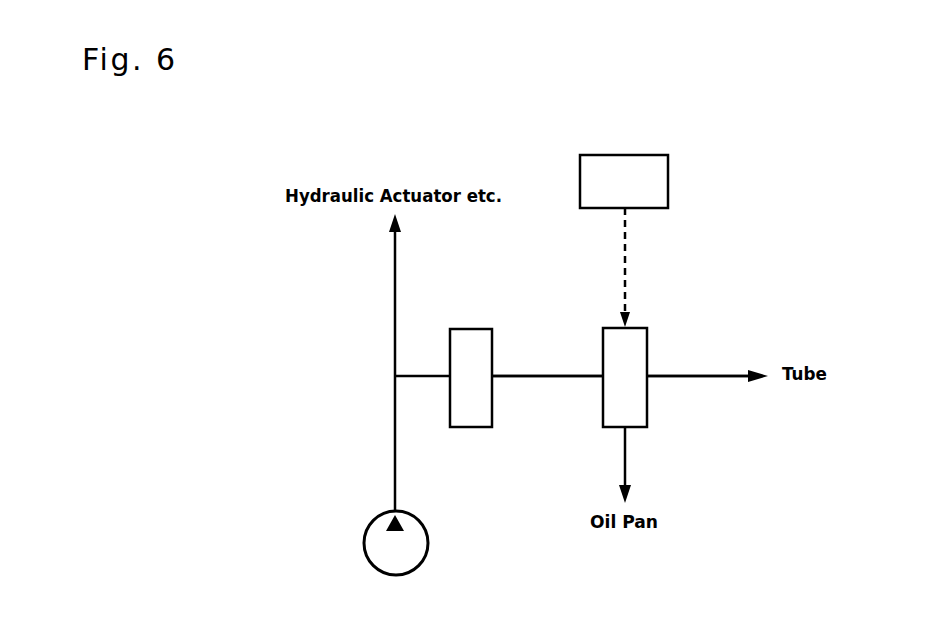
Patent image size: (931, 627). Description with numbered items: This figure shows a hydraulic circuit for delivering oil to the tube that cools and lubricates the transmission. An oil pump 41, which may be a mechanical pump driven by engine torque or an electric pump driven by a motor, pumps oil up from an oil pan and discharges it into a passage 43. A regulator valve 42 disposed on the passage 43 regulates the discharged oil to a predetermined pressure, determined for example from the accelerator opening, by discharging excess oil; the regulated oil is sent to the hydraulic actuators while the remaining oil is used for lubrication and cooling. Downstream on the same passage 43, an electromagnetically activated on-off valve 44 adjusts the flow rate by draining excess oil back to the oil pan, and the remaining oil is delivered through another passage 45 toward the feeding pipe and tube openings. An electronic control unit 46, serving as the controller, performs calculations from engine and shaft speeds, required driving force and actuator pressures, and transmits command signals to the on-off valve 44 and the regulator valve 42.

The oil pump 41 is at (431, 545).
The regulator valve 42 is at (472, 328).
The passage 43 is at (538, 378).
The on-off valve 44 is at (648, 413).
The another passage 45 is at (722, 373).
The electronic control unit 46 is at (668, 182).